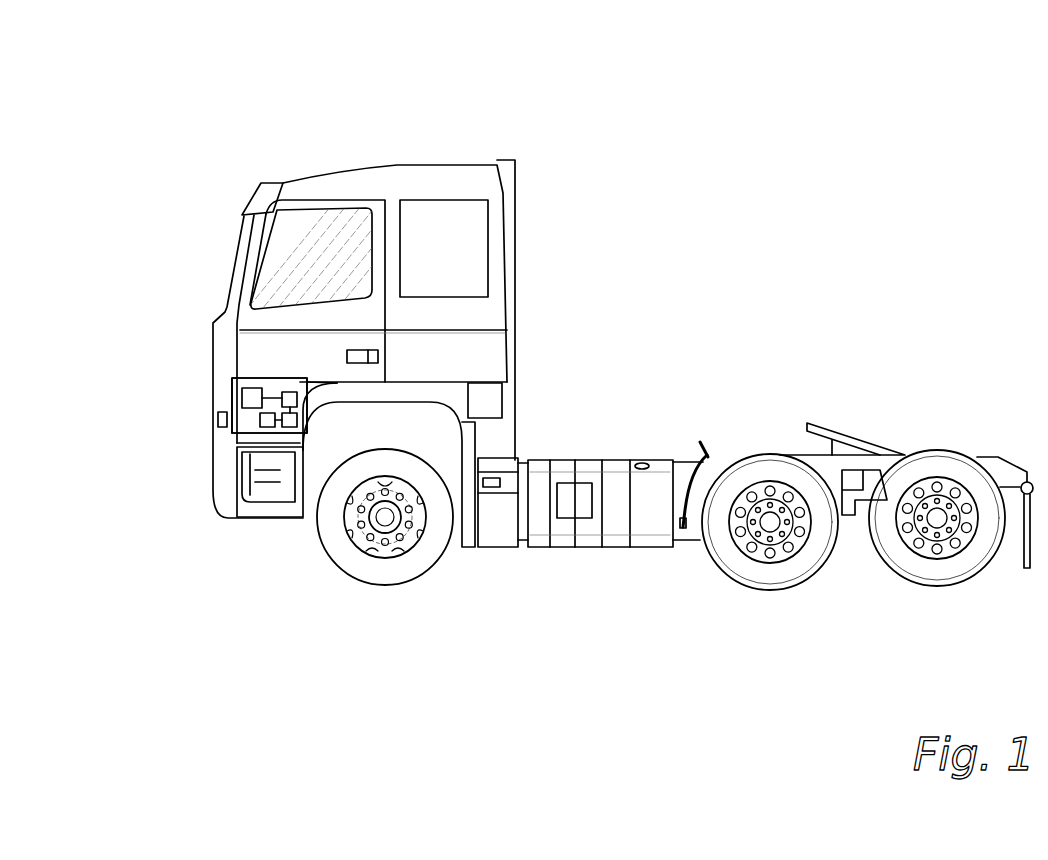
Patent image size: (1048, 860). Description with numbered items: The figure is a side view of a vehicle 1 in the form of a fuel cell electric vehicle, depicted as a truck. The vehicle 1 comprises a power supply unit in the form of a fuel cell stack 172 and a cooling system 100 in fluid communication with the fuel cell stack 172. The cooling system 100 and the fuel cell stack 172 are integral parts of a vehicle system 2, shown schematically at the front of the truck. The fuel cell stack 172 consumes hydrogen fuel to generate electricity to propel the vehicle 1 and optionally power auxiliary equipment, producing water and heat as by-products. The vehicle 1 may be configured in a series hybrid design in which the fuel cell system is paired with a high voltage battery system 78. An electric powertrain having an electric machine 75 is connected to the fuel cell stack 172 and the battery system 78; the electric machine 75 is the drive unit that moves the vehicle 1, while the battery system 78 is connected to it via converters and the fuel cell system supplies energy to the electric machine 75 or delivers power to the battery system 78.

The vehicle 1 is at (613, 114).
The vehicle system 2 is at (228, 402).
The electric machine 75 is at (290, 428).
The battery system 78 is at (267, 428).
The cooling system 100 is at (250, 388).
The fuel cell stack 172 is at (289, 392).